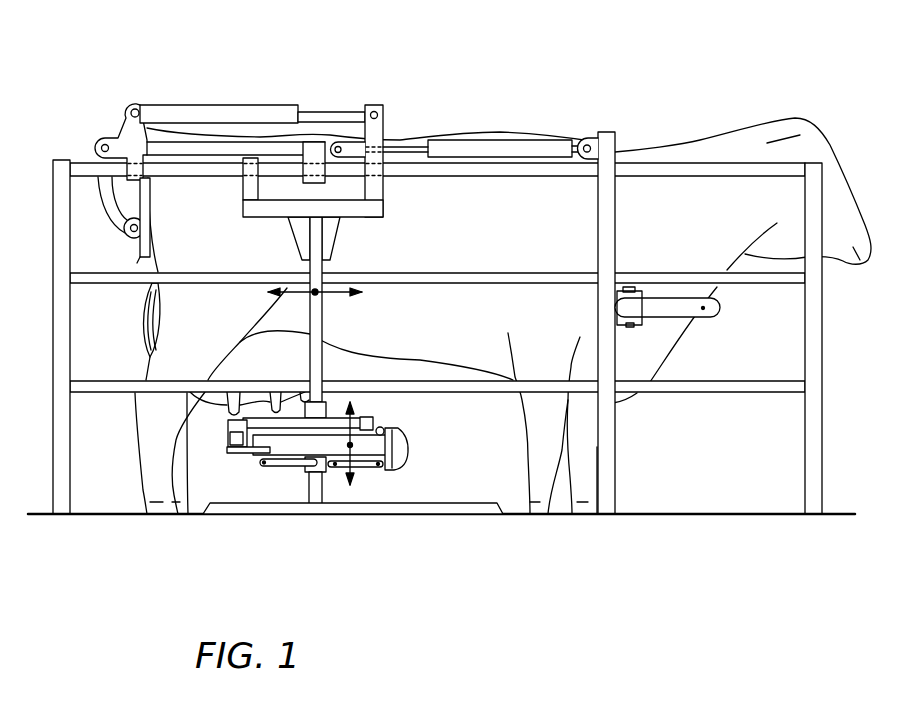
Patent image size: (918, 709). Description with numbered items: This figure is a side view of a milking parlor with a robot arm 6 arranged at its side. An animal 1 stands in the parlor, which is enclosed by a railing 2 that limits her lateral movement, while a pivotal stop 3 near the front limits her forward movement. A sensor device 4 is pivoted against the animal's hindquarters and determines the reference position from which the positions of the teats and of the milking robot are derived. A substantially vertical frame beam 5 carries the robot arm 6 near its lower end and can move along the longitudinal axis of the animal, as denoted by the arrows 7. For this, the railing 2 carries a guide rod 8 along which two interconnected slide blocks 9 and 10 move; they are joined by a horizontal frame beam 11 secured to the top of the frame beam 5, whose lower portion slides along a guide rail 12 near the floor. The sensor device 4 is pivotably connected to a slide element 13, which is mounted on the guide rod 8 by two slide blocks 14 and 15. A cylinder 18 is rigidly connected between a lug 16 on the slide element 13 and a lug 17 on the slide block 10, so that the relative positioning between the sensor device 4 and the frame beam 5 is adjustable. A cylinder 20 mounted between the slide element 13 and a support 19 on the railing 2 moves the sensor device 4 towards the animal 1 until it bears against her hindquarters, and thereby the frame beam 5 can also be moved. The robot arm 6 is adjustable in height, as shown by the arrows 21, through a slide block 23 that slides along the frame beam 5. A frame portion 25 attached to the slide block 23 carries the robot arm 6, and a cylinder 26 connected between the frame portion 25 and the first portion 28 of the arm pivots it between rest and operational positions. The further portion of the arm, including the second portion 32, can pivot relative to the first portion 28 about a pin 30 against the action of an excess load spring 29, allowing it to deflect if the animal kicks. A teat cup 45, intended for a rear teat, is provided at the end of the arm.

The animal 1 is at (767, 130).
The railing 2 is at (441, 323).
The pivotal stop 3 is at (703, 308).
The sensor device 4 is at (140, 248).
The vertical frame beam 5 is at (320, 332).
The robot arm 6 is at (439, 463).
The arrows 7 is at (297, 296).
The guide rod 8 is at (532, 175).
The slide block 9 is at (242, 195).
The slide block 10 is at (380, 188).
The horizontal frame beam 11 is at (363, 210).
The guide rail 12 is at (440, 517).
The slide element 13 is at (150, 143).
The slide block 14 is at (150, 187).
The slide block 15 is at (310, 187).
The lug 16 is at (135, 103).
The lug 17 is at (387, 110).
The cylinder 18 is at (237, 110).
The support 19 is at (587, 132).
The cylinder 20 is at (500, 140).
The arrows 21 is at (360, 420).
The slide block 23 is at (302, 475).
The frame portion 25 is at (228, 428).
The cylinder 26 is at (333, 400).
The first portion 28 is at (262, 445).
The excess load spring 29 is at (370, 468).
The pin 30 is at (385, 428).
The second portion 32 is at (402, 452).
The teat cup 45 is at (228, 437).